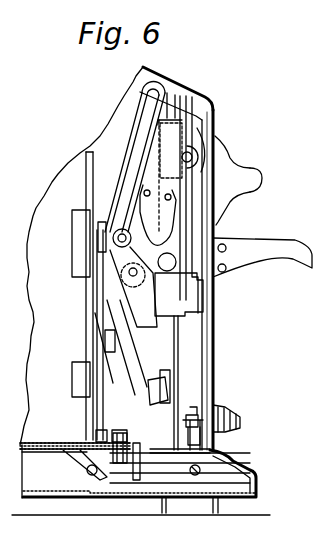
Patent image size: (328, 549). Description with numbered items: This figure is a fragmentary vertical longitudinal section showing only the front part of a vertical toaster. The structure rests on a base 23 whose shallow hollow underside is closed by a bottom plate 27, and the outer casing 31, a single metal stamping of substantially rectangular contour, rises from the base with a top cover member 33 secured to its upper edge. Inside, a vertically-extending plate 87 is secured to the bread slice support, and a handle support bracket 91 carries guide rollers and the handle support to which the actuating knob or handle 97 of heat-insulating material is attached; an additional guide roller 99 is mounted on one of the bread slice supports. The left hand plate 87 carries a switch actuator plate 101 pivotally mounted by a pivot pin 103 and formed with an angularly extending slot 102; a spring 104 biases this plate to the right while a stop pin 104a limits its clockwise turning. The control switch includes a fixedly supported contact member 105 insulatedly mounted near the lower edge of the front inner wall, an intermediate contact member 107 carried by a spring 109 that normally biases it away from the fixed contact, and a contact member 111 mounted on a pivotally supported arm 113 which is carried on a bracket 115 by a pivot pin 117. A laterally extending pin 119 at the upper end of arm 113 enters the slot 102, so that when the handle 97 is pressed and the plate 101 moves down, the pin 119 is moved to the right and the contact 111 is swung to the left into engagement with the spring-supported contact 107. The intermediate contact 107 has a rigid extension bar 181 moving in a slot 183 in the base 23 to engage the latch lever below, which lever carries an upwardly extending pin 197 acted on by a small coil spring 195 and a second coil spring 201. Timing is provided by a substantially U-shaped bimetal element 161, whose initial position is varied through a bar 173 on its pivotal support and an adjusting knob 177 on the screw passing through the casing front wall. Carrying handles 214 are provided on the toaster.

The top cover member 33 is at (163, 82).
The outer casing 31 is at (211, 343).
The handle support bracket 91 is at (200, 112).
The additional guide roller 99 is at (205, 141).
The switch actuator plate 101 is at (171, 176).
The slot 102 is at (133, 168).
The pivot pin 103 is at (178, 250).
The spring 104 is at (242, 175).
The stop pin 104a is at (182, 200).
The handle 214 is at (263, 178).
The actuating knob or handle 97 is at (287, 245).
The vertically-extending plate 87 is at (190, 298).
The pivotally supported arm 113 is at (162, 337).
The spring 109 is at (160, 358).
The contact member 111 is at (173, 398).
The bar 173 is at (189, 422).
The adjusting knob 177 is at (233, 421).
The laterally extending pin 119 is at (100, 243).
The bracket 115 is at (100, 283).
The pivot pin 117 is at (148, 244).
The fixedly supported contact member 105 is at (97, 412).
The intermediate contact member 107 is at (130, 407).
The coil spring 195 is at (102, 430).
The pin 197 is at (123, 431).
The second coil spring 201 is at (80, 462).
The slot 183 is at (120, 458).
The extension bar 181 is at (140, 478).
The bimetal element 161 is at (163, 484).
The base 23 is at (234, 468).
The bottom plate 27 is at (200, 498).